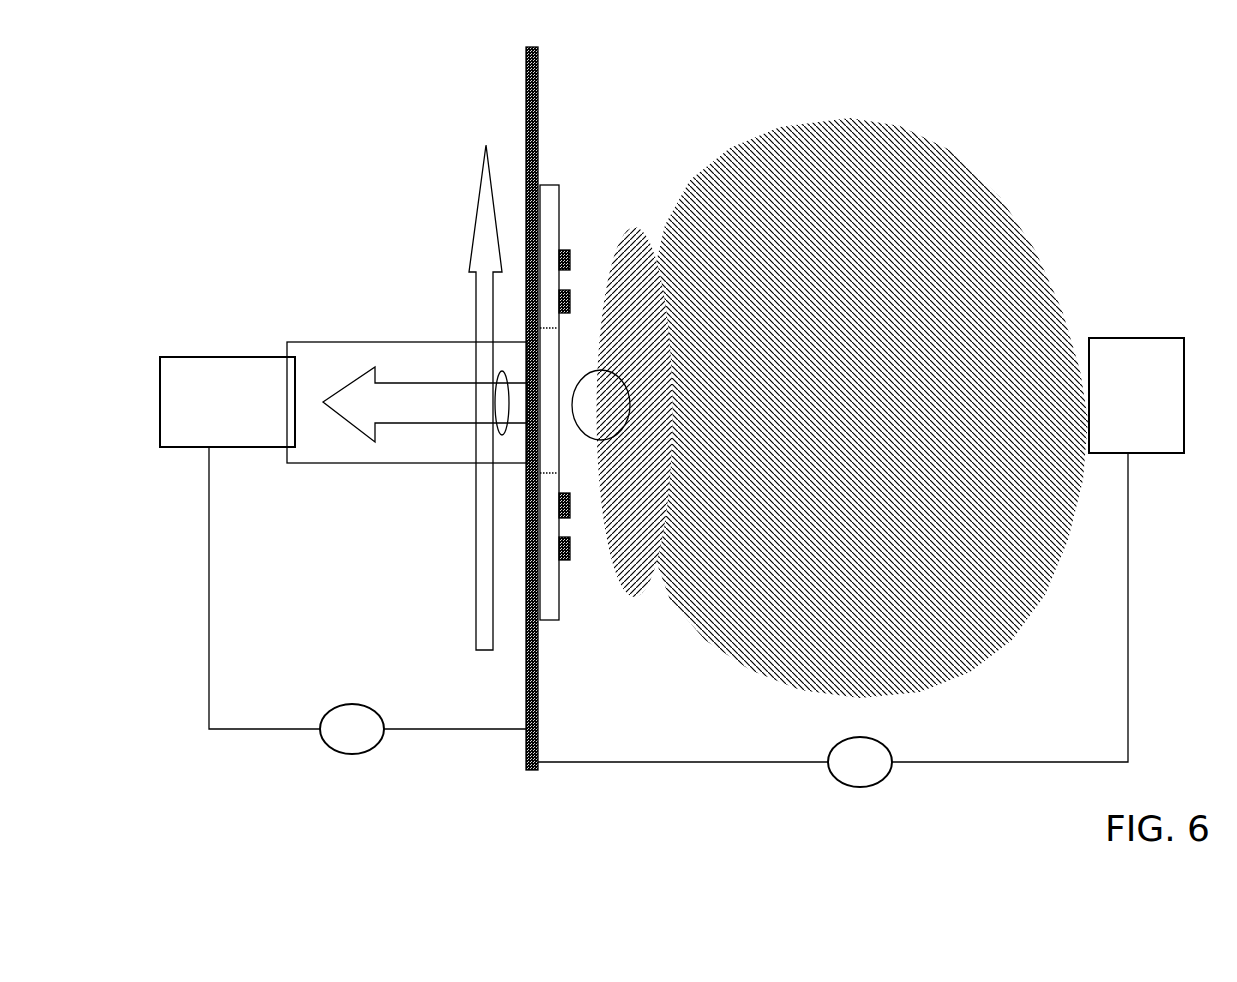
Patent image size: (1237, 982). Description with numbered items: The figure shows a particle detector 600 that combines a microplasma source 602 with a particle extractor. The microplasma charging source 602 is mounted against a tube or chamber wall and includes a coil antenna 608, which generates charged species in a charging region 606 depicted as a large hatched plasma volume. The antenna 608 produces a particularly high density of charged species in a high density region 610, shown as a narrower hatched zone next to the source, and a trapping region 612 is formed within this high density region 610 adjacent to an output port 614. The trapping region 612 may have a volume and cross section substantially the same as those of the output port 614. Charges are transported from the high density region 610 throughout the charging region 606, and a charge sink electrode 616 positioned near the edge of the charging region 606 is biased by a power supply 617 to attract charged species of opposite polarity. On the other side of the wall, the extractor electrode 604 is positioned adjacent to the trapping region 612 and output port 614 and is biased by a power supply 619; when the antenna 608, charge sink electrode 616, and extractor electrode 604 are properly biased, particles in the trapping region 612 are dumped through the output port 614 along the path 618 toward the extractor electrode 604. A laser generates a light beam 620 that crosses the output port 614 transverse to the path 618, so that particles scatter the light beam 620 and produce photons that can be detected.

The particle detector 600 is at (834, 72).
The microplasma source 602 is at (584, 168).
The extractor electrode 604 is at (226, 355).
The charging region 606 is at (996, 184).
The coil antenna 608 is at (569, 252).
The high density region 610 is at (648, 483).
The trapping region 612 is at (620, 416).
The output port 614 is at (496, 380).
The charge sink electrode 616 is at (1136, 337).
The power supply 617 is at (873, 740).
The path 618 is at (417, 413).
The power supply 619 is at (355, 704).
The light beam 620 is at (470, 712).